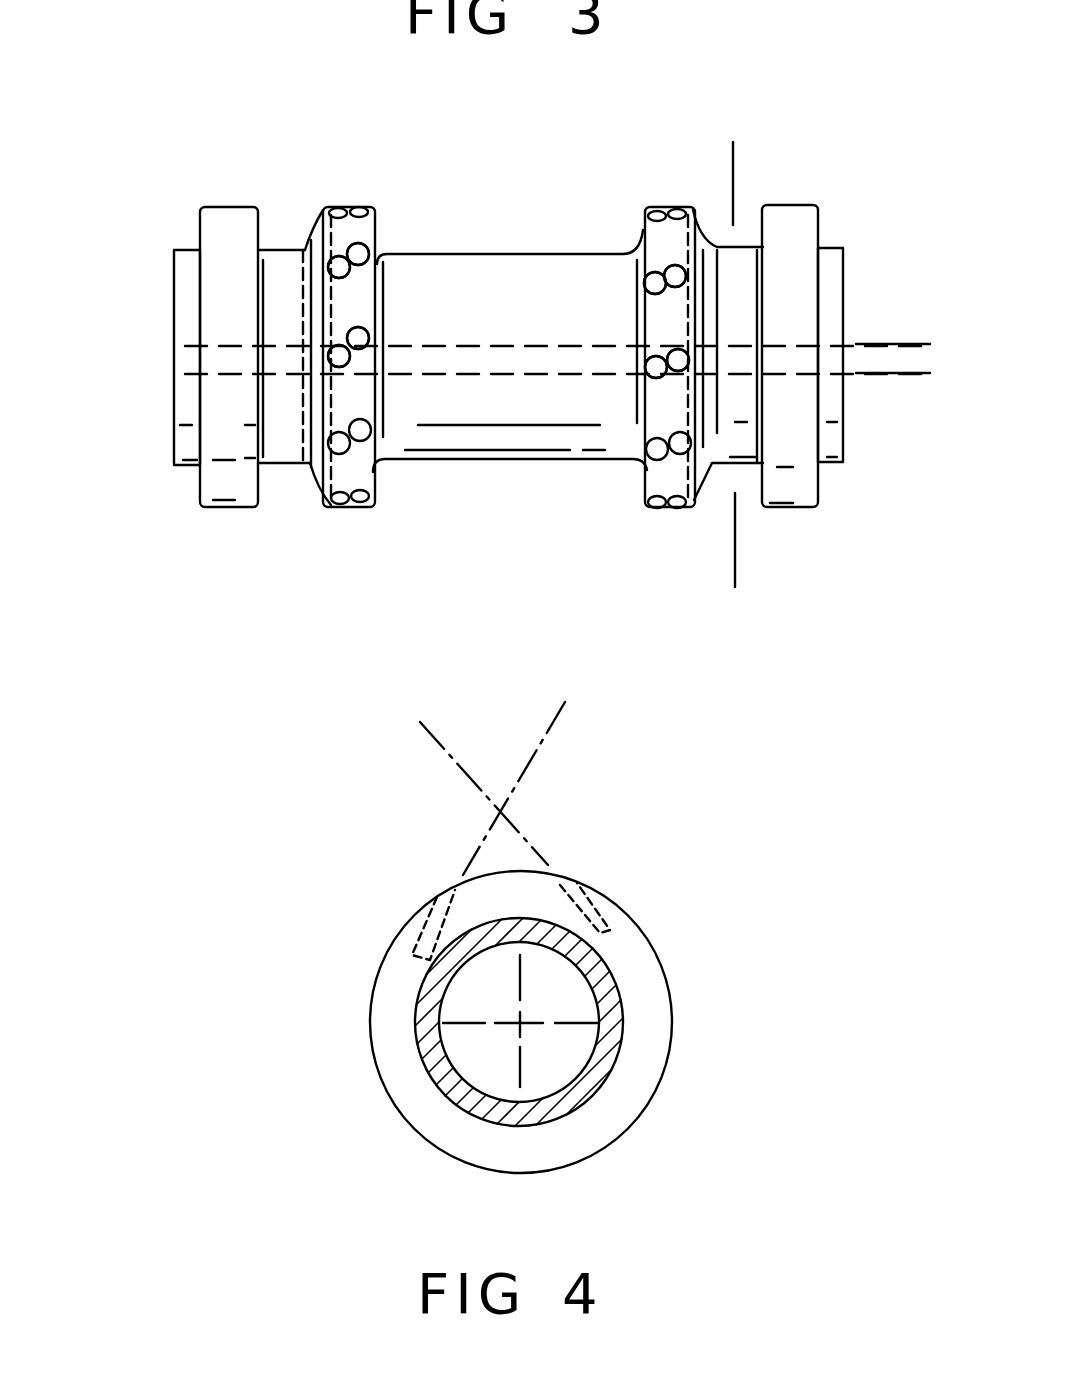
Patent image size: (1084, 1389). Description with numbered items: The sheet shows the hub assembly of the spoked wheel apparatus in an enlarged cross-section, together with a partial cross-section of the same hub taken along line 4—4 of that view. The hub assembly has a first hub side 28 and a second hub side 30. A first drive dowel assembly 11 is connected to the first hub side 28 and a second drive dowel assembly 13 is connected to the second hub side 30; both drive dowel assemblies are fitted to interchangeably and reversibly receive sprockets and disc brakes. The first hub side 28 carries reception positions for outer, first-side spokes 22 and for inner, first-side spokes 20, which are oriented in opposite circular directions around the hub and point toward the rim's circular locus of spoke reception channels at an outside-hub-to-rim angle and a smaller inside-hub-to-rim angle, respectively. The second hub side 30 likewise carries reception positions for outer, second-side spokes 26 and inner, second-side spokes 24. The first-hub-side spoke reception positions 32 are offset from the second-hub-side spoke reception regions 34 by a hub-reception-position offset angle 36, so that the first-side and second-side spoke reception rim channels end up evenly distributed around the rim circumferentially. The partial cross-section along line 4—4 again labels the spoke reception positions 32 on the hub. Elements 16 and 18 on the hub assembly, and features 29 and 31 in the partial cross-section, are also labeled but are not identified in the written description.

In FIG. 3, the first drive dowel assembly 11 is at (795, 234).
In FIG. 3, the second drive dowel assembly 13 is at (222, 260).
In FIG. 3, the right bearing race 16 is at (643, 227).
In FIG. 3, the left bearing race 18 is at (350, 248).
In FIG. 3, the inner, first-side spokes 20 is at (660, 378).
In FIG. 3, the outer, first-side spokes 22 is at (682, 378).
In FIG. 3, the inner, second-side spokes 24 is at (362, 336).
In FIG. 3, the outer, second-side spokes 26 is at (333, 505).
In FIG. 3, the first hub side 28 is at (734, 423).
In FIG. 3, the second hub side 30 is at (311, 432).
In FIG. 3, the first-hub-side spoke reception positions 32 is at (709, 266).
In FIG. 4, the first-hub-side spoke reception positions 32 is at (400, 931).
In FIG. 3, the second-hub-side spoke reception regions 34 is at (309, 252).
In FIG. 3, the hub-reception-position offset angle 36 is at (912, 306).
In FIG. 4, the first angled hole 29 is at (431, 899).
In FIG. 4, the second angled hole 31 is at (600, 899).
In FIG. 3, the line 4— 4 is at (651, 153).